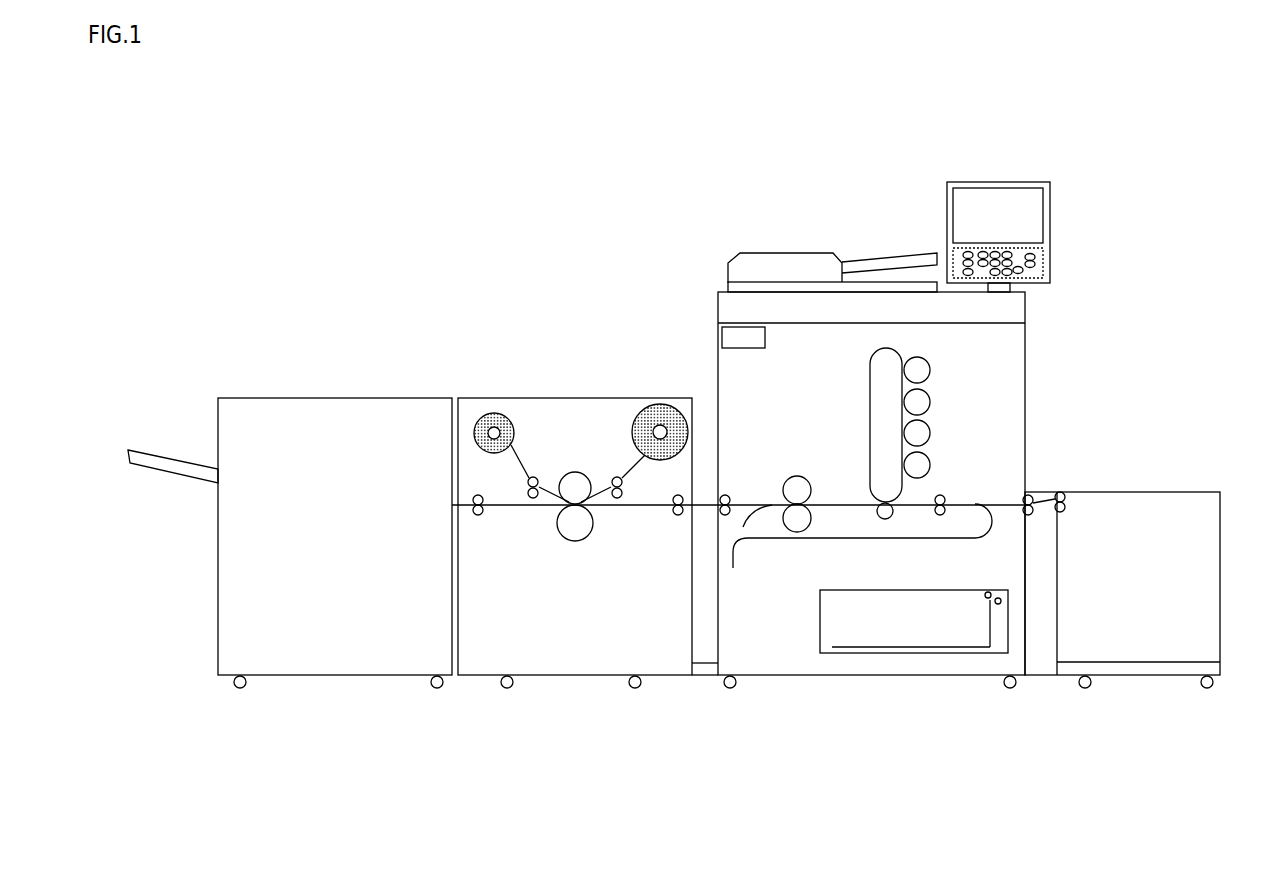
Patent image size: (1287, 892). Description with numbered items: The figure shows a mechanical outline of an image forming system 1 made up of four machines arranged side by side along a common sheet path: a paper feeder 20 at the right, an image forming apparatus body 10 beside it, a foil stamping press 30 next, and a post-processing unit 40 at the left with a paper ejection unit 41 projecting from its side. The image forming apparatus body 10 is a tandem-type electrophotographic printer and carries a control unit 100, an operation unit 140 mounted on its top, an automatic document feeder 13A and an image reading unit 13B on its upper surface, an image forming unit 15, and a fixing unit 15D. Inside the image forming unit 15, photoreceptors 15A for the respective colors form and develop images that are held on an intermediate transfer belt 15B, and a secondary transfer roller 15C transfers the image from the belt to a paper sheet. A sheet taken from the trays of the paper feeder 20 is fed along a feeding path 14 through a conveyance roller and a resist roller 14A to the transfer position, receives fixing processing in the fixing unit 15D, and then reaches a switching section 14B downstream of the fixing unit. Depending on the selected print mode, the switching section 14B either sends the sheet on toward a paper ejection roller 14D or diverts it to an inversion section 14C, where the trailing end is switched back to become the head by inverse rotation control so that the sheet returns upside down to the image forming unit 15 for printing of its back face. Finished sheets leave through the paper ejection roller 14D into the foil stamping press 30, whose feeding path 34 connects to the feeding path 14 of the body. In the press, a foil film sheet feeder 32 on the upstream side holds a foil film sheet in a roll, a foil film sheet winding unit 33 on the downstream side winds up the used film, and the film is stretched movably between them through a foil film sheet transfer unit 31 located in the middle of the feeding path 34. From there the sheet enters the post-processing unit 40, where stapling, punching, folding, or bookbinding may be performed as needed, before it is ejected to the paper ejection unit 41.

The image forming system 1 is at (735, 824).
The control unit 100 is at (724, 304).
The image forming apparatus body 10 is at (1002, 747).
The automatic document feeder 13A is at (731, 258).
The image reading unit 13B is at (736, 304).
The feeding path 14 is at (886, 542).
The resist roller 14A is at (942, 493).
The switching section 14B is at (768, 502).
The inversion section 14C is at (885, 565).
The paper ejection roller 14D is at (730, 492).
The image forming unit 15 is at (863, 337).
The photoreceptors 15A is at (930, 358).
The intermediate transfer belt 15B is at (867, 424).
The secondary transfer roller 15C is at (878, 500).
The fixing unit 15D is at (783, 418).
The operation unit 140 is at (1018, 143).
The paper feeder 20 is at (1130, 413).
The foil stamping press 30 is at (497, 242).
The foil film sheet transfer unit 31 is at (627, 595).
The foil film sheet feeder 32 is at (658, 362).
The foil film sheet winding unit 33 is at (462, 317).
The feeding path 34 is at (637, 507).
The post-processing unit 40 is at (352, 385).
The paper ejection unit 41 is at (127, 372).